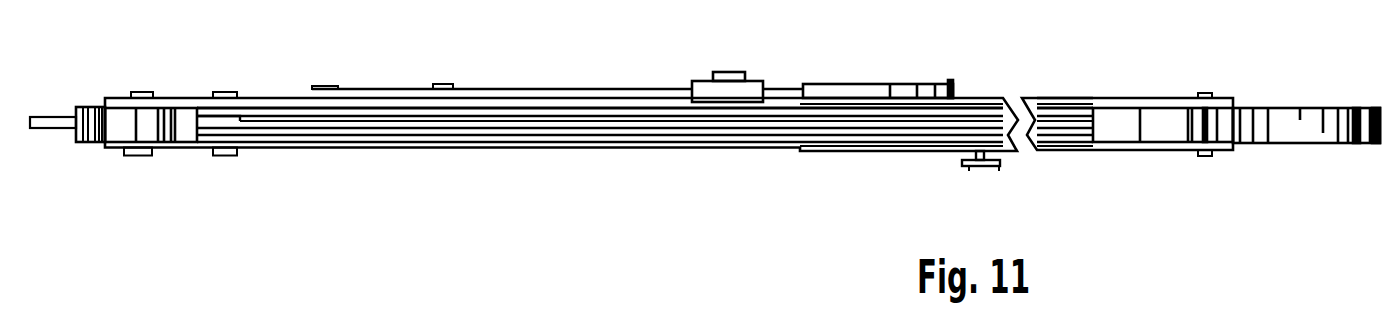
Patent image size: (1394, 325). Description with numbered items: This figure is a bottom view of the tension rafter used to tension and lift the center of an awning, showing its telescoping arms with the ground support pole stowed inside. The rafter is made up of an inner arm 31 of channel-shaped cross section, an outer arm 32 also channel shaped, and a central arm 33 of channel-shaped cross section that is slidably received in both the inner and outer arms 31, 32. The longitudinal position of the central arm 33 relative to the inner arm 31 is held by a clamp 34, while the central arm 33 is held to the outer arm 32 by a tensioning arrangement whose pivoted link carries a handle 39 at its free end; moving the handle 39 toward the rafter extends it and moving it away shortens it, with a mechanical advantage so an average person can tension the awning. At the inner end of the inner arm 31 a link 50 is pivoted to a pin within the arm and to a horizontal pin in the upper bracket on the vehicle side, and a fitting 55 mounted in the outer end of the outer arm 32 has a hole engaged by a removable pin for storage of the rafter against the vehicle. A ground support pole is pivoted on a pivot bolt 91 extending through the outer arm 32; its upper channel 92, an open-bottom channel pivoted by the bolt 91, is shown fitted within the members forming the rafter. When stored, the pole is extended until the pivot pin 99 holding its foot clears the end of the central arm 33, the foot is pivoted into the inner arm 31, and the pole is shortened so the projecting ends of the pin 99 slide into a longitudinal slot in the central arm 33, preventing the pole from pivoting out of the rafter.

The inner arm 31 is at (1005, 93).
The outer arm 32 is at (126, 149).
The central arm 33 is at (380, 148).
The clamp 34 is at (972, 168).
The handle 39 is at (835, 85).
The link 50 is at (1363, 108).
The fitting 55 is at (86, 107).
The pivot bolt 91 is at (223, 124).
The upper channel 92 is at (250, 115).
The pivot pin 99 is at (1070, 103).